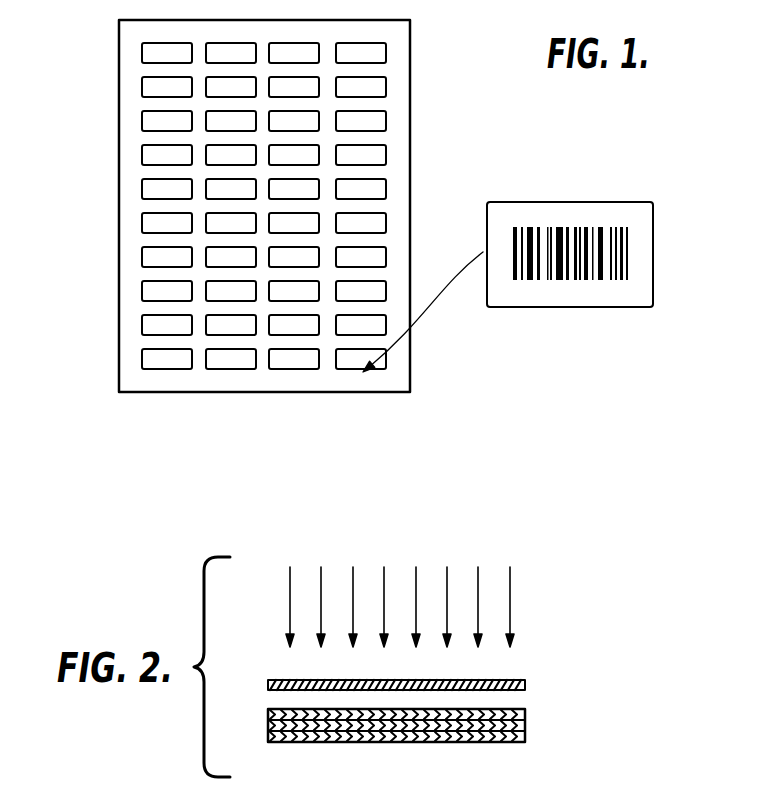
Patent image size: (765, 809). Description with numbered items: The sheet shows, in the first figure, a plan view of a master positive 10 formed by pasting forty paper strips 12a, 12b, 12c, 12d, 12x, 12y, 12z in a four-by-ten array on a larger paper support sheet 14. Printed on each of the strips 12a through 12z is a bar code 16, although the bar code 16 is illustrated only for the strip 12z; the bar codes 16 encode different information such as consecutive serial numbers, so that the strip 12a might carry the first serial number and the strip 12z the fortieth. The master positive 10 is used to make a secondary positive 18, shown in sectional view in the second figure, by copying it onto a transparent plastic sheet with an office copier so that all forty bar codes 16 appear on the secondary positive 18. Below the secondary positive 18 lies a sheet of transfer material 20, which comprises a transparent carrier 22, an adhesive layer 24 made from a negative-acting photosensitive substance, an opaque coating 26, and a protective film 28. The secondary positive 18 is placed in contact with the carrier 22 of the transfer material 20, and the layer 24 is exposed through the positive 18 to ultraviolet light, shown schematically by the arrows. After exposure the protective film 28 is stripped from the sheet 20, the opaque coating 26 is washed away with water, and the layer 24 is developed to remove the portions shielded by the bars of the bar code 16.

In FIG. 1, the master positive 10 is at (92, 371).
In FIG. 1, the paper strip 12a is at (150, 50).
In FIG. 1, the paper strip 12b is at (150, 86).
In FIG. 1, the paper strip 12c is at (150, 120).
In FIG. 1, the paper strip 12d is at (152, 362).
In FIG. 1, the paper strip 12x is at (378, 288).
In FIG. 1, the paper strip 12y is at (378, 327).
In FIG. 1, the paper strip 12z is at (553, 307).
In FIG. 1, the paper support sheet 14 is at (186, 385).
In FIG. 1, the bar code 16 is at (638, 259).
In FIG. 2, the secondary positive 18 is at (525, 685).
In FIG. 2, the sheet of transfer material 20 is at (566, 719).
In FIG. 2, the transparent carrier 22 is at (525, 713).
In FIG. 2, the adhesive layer 24 is at (268, 720).
In FIG. 2, the opaque coating 26 is at (525, 730).
In FIG. 2, the protective film 28 is at (377, 742).